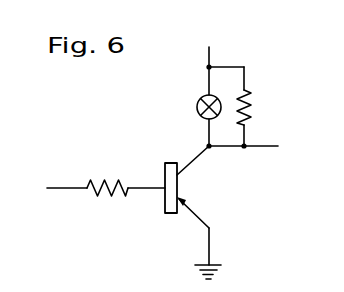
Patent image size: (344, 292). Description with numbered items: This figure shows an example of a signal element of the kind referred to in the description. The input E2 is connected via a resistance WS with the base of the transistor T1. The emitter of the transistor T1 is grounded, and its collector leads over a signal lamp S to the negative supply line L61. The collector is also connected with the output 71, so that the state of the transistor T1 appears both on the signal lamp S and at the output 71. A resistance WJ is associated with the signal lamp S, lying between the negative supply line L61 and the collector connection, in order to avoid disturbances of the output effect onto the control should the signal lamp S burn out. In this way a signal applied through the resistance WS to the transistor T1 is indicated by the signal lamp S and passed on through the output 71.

The negative supply line L61 is at (210, 57).
The signal lamp S is at (202, 98).
The resistance WJ is at (251, 110).
The output 71 is at (255, 148).
The input terminal E2 is at (50, 188).
The resistance WS is at (101, 181).
The transistor T1 is at (173, 188).